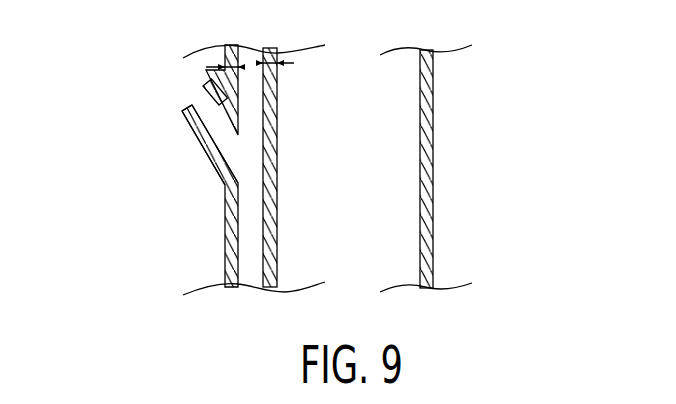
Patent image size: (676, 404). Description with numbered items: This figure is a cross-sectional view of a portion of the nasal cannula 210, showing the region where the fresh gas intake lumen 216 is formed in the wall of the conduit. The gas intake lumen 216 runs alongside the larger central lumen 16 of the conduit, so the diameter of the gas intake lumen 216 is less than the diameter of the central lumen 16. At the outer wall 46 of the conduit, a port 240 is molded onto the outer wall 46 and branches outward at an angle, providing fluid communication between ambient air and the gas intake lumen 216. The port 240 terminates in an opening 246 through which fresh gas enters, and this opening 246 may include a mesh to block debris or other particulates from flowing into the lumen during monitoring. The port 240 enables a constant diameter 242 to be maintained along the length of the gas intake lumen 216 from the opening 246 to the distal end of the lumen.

The nasal cannula 210 is at (127, 57).
The constant diameter 242 is at (220, 62).
The opening 246 is at (190, 106).
The port 240 is at (196, 138).
The outer wall 46 is at (223, 208).
The gas intake lumen 216 is at (254, 212).
The central lumen 16 is at (357, 100).